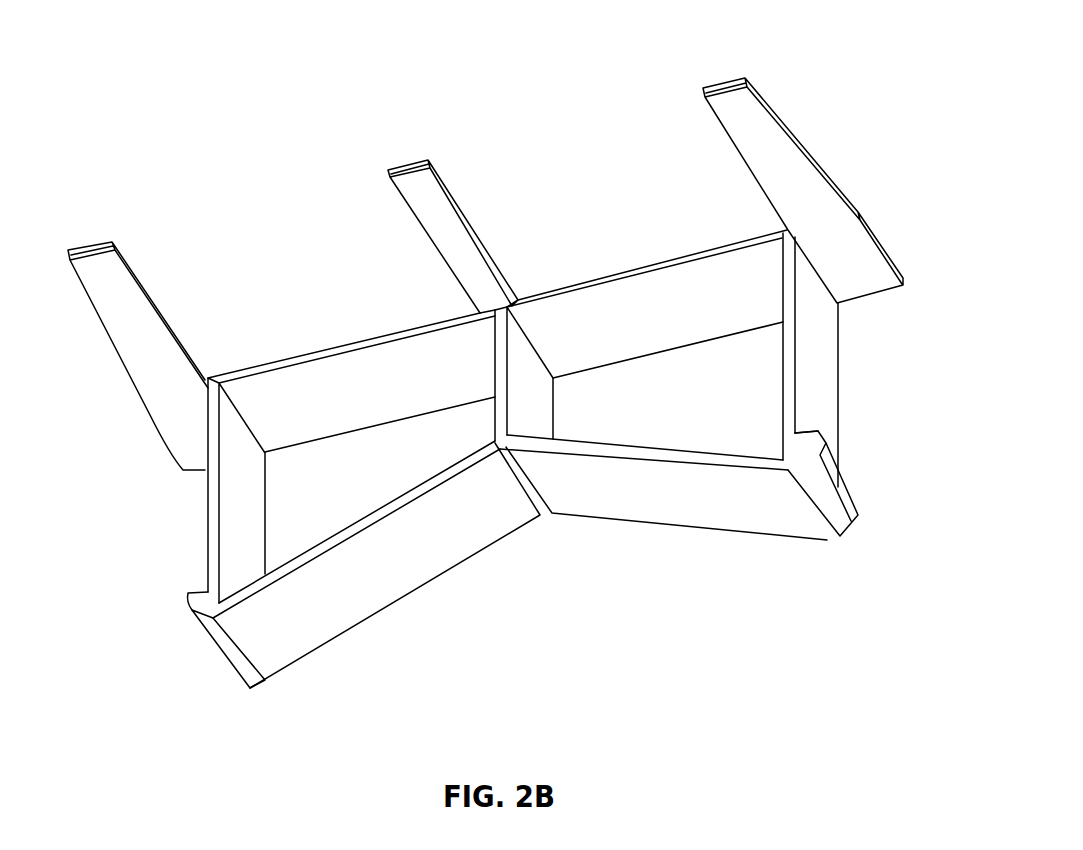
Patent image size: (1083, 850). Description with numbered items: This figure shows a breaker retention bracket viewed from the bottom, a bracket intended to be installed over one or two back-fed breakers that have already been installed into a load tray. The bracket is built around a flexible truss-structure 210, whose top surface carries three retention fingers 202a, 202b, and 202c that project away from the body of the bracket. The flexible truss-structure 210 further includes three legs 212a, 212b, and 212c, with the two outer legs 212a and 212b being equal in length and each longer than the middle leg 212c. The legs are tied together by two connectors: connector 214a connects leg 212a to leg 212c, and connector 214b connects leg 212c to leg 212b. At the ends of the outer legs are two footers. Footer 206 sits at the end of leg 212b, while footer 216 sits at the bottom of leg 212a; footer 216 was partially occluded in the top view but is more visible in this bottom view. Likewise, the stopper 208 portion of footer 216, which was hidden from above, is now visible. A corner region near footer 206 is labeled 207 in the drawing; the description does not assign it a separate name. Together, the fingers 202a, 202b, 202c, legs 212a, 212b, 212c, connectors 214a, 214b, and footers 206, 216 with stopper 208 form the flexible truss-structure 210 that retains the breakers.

The retention finger 202a is at (741, 78).
The retention finger 202b is at (408, 157).
The retention finger 202c is at (100, 243).
The footer 206 is at (165, 612).
The bend corner 207 is at (188, 594).
The stopper 208 is at (803, 446).
The flexible truss-structure 210 is at (544, 577).
The leg 212a is at (796, 389).
The leg 212b is at (245, 481).
The leg 212c is at (498, 407).
The connector 214a is at (663, 507).
The connector 214b is at (446, 545).
The footer 216 is at (810, 430).